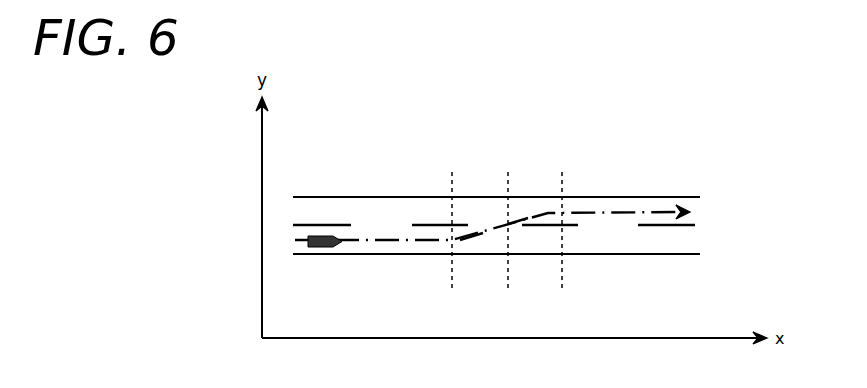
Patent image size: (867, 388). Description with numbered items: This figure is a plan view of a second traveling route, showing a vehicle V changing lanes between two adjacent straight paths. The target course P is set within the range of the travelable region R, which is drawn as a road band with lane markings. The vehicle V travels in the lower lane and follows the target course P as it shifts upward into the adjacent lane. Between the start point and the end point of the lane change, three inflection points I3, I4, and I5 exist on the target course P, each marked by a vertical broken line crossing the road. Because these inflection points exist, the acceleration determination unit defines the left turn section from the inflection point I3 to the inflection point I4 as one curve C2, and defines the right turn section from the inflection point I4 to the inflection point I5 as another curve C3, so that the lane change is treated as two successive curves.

The target course P is at (382, 236).
The vehicle V is at (333, 248).
The travelable region R is at (708, 197).
The curve C2 is at (482, 238).
The curve C3 is at (537, 216).
The inflection point I3 is at (450, 217).
The inflection point I4 is at (506, 217).
The inflection point I5 is at (560, 217).